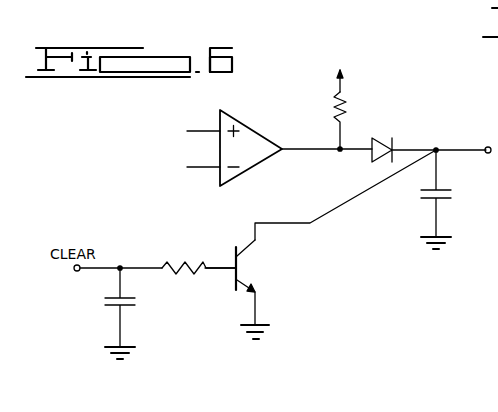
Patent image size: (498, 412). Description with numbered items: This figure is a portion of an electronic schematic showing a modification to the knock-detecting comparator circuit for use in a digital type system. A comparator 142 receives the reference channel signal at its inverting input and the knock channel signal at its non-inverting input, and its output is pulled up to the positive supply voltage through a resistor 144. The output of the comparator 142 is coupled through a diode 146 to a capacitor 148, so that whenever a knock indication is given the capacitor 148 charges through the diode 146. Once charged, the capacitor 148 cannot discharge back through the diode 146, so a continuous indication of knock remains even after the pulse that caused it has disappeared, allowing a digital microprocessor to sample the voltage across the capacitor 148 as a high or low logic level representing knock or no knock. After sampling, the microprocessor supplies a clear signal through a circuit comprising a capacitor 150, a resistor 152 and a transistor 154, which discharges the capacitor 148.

The comparator 142 is at (251, 132).
The resistor 144 is at (350, 125).
The diode 146 is at (378, 149).
The capacitor 148 is at (426, 201).
The capacitor 150 is at (130, 305).
The resistor 152 is at (189, 262).
The transistor 154 is at (241, 265).